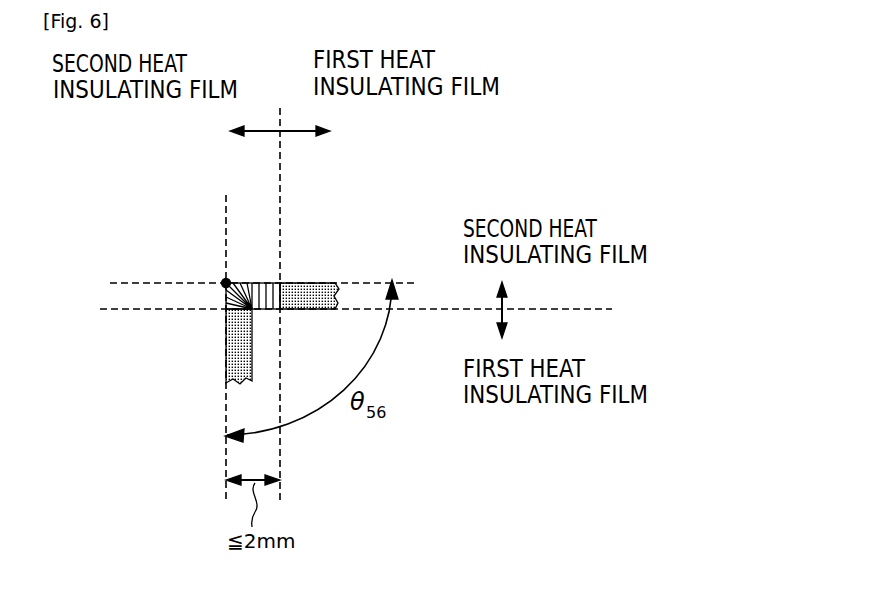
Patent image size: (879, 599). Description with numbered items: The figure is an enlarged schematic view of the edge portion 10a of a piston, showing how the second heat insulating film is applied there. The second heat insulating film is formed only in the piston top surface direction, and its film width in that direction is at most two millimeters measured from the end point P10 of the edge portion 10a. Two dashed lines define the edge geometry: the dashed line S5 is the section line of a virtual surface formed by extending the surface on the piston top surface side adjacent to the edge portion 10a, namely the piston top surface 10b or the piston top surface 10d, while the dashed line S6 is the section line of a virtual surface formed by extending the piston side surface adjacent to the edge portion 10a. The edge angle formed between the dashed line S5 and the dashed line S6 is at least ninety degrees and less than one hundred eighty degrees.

The edge portion 10a is at (255, 283).
The piston top surface 10b is at (345, 254).
The piston top surface 10d is at (313, 283).
The dashed line S5 is at (249, 288).
The dashed line S6 is at (225, 333).
The end point P10 is at (226, 283).